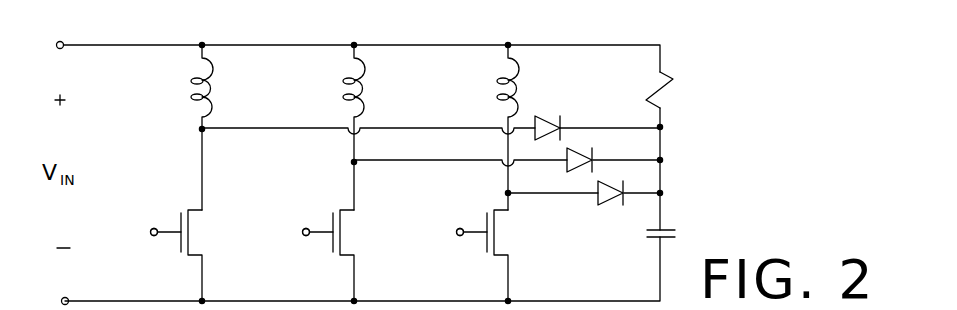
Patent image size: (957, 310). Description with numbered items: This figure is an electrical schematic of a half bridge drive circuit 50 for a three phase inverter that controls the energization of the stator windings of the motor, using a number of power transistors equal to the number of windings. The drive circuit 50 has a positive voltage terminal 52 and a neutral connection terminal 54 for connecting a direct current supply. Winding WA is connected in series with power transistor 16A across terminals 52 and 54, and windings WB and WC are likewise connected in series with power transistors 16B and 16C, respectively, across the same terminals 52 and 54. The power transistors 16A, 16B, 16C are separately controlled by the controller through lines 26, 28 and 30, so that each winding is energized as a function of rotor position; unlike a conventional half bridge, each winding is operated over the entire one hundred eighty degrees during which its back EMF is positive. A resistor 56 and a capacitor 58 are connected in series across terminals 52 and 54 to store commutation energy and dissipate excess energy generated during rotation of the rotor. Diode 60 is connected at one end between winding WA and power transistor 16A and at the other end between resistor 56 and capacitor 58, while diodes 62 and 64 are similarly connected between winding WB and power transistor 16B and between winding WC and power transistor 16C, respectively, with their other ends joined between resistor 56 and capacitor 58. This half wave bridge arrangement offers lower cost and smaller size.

The drive circuit 50 is at (692, 183).
The positive voltage terminal 52 is at (62, 41).
The neutral connection terminal 54 is at (67, 297).
The winding WA is at (211, 96).
The winding WB is at (363, 96).
The winding WC is at (517, 96).
The power transistor 16A is at (192, 233).
The power transistor 16B is at (344, 233).
The power transistor 16C is at (498, 233).
The line 26 is at (171, 229).
The line 28 is at (323, 229).
The line 30 is at (477, 229).
The diode 60 is at (558, 116).
The diode 62 is at (590, 150).
The diode 64 is at (616, 208).
The resistor 56 is at (664, 88).
The capacitor 58 is at (647, 236).